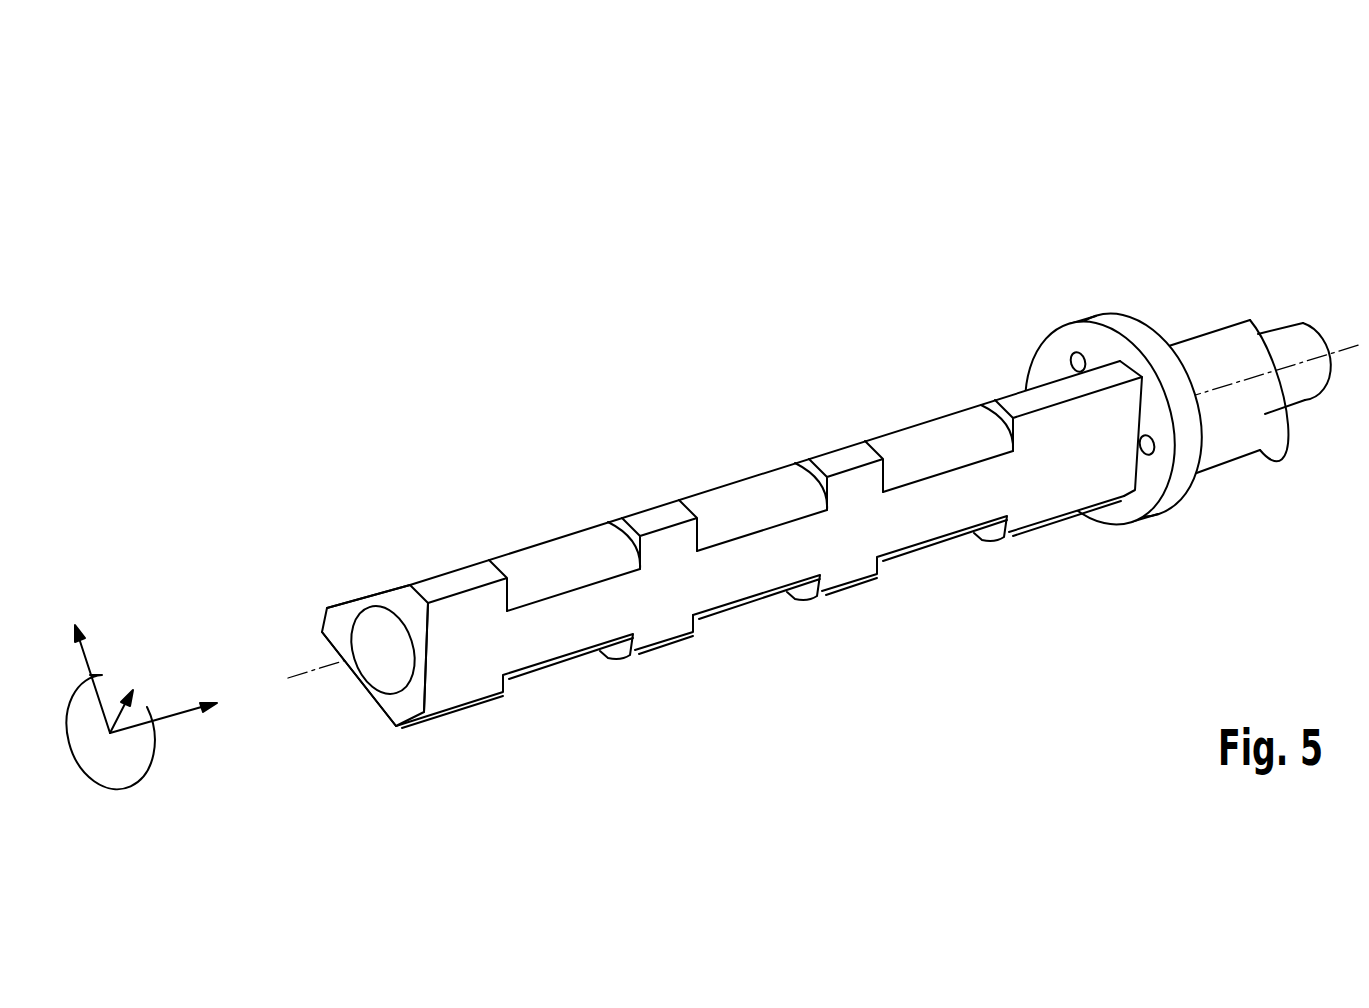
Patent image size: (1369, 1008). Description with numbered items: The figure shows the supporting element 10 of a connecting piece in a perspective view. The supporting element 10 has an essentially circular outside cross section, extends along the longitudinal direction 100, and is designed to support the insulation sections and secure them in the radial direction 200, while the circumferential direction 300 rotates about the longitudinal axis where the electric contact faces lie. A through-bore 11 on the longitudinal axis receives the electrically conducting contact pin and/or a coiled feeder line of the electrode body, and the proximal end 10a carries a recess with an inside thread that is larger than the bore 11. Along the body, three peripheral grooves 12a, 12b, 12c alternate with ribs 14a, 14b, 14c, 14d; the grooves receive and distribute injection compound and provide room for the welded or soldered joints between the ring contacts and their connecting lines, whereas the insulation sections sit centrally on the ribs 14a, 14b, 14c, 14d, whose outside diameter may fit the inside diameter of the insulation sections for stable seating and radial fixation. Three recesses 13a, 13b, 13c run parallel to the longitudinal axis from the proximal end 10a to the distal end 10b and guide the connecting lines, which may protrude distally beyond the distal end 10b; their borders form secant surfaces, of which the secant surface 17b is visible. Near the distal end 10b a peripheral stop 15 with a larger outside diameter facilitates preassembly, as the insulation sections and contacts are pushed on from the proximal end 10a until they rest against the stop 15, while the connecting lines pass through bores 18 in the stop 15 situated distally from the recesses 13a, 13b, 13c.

The supporting element 10 is at (745, 444).
The proximal end 10a is at (336, 614).
The distal end 10b is at (1293, 230).
The through-bore 11 is at (367, 638).
The peripheral groove 12a is at (570, 548).
The peripheral groove 12b is at (752, 490).
The peripheral groove 12c is at (928, 440).
The recess 13a is at (370, 592).
The recess 13b is at (428, 688).
The recess 13c is at (357, 680).
The rib 14a is at (462, 580).
The rib 14b is at (660, 515).
The rib 14c is at (848, 455).
The rib 14d is at (1013, 400).
The peripheral stop 15 is at (1113, 395).
The secant surface 17b is at (940, 510).
The bore 18 is at (1078, 352).
The longitudinal direction 100 is at (186, 705).
The radial direction 200 is at (103, 688).
The circumferential direction 300 is at (146, 697).